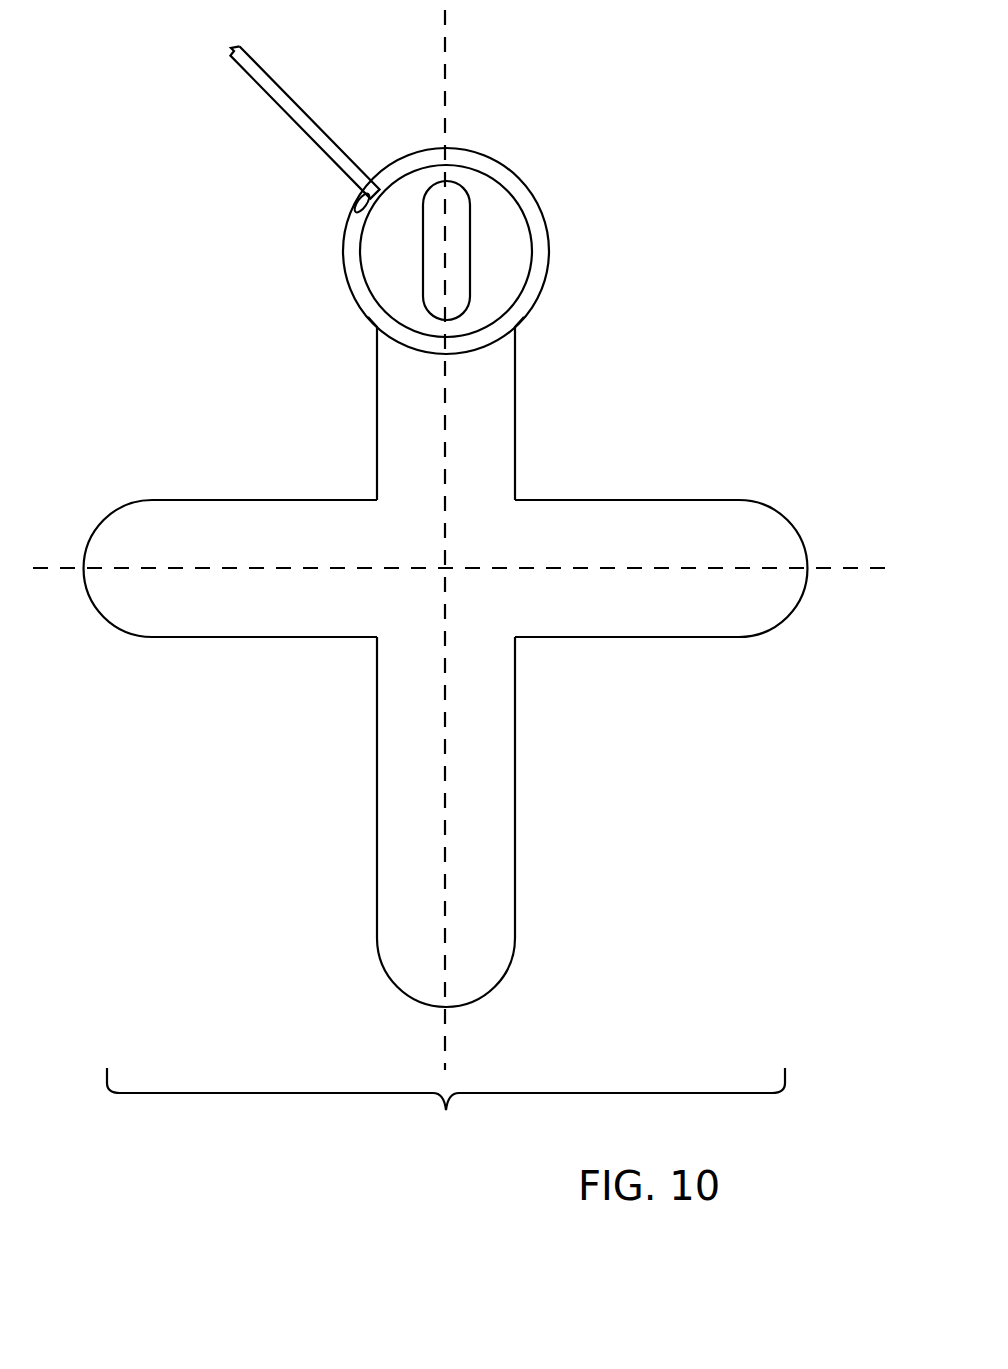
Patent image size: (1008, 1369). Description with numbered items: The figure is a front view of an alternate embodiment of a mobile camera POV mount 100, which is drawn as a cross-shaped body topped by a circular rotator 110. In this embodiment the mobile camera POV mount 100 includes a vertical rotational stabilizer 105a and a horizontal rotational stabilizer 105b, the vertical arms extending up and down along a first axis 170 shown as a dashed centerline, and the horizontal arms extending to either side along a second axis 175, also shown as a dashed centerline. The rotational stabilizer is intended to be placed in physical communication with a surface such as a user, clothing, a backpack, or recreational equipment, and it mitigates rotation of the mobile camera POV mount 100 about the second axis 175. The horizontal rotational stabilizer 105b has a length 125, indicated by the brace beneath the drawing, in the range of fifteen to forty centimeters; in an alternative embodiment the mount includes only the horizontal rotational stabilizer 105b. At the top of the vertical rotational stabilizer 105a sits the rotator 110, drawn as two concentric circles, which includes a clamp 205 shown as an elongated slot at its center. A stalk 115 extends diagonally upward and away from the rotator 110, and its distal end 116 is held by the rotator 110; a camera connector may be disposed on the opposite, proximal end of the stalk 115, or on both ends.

The mobile camera POV mount 100 is at (98, 67).
The vertical rotational stabilizer 105a is at (377, 420).
The horizontal rotational stabilizer 105b is at (240, 637).
The rotator 110 is at (375, 303).
The stalk 115 is at (292, 117).
The distal end 116 is at (358, 200).
The length 125 is at (446, 1114).
The first axis 170 is at (445, 122).
The second axis 175 is at (138, 568).
The clamp 205 is at (470, 250).